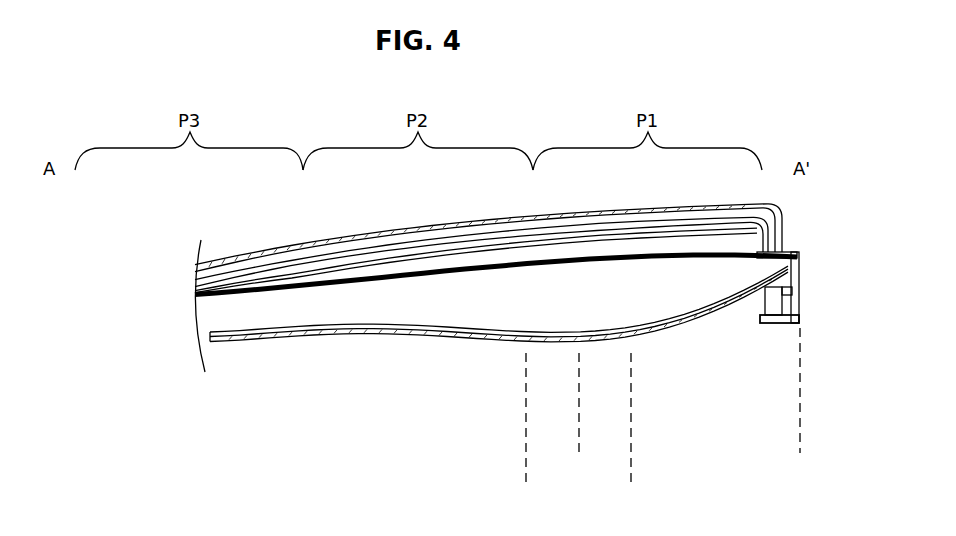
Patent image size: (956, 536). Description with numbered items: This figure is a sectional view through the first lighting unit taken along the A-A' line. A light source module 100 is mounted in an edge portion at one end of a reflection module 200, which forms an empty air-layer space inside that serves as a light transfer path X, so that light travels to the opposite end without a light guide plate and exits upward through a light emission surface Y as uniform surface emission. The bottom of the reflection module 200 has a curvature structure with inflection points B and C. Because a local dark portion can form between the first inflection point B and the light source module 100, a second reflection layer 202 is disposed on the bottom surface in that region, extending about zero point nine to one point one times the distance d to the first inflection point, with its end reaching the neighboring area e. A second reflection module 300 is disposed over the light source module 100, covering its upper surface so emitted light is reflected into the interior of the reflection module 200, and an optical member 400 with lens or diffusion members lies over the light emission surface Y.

The light source module 100 is at (800, 257).
The reflection module 200 is at (732, 298).
The second reflection layer 202 is at (703, 318).
The second reflection module 300 is at (800, 268).
The optical member 400 is at (793, 206).